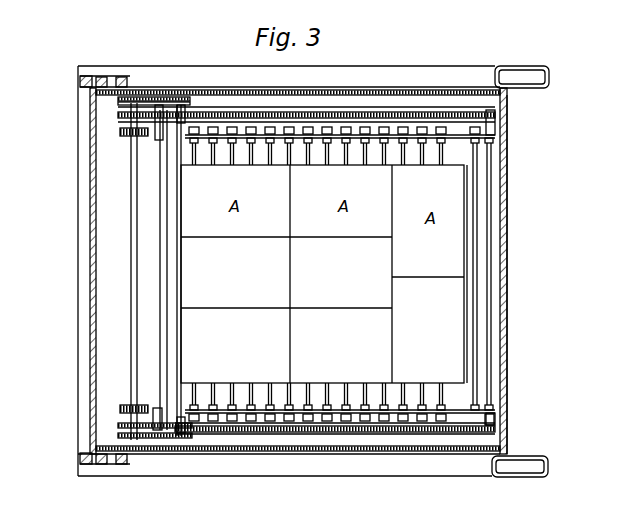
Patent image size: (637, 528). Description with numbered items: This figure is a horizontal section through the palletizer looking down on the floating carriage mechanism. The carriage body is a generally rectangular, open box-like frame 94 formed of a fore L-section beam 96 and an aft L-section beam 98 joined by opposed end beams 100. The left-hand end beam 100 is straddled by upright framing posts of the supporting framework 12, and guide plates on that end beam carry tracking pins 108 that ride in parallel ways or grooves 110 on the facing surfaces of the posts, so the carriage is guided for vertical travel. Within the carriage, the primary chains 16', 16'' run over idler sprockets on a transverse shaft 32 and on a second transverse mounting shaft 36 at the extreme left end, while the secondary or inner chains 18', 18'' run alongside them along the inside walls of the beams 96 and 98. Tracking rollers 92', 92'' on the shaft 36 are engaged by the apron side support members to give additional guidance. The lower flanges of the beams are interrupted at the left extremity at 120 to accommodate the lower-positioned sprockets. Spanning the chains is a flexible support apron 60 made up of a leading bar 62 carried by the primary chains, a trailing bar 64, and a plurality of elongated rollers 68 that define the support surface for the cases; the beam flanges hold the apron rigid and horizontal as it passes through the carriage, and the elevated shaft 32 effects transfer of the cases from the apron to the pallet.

The supporting framework 12 is at (447, 70).
The end beams 100 is at (507, 255).
The aft L-section beam 98 is at (360, 93).
The fore L-section beam 96 is at (333, 449).
The carriage frame 94 is at (505, 170).
The ways or grooves 110 is at (84, 80).
The tracking pins 108 is at (122, 78).
The transverse mounting shaft 36 is at (135, 243).
The transverse shaft 32 is at (165, 203).
The primary chain 16'' is at (154, 76).
The primary chain 16' is at (155, 461).
The secondary chain 18'' is at (306, 108).
The secondary chain 18' is at (360, 428).
The tracking roller 92'' is at (124, 148).
The tracking roller 92' is at (123, 394).
The flange interruption 120 is at (162, 132).
The elongated rollers 68 is at (320, 163).
The flexible support apron 60 is at (500, 392).
The trailing bar 64 is at (504, 418).
The leading bar 62 is at (198, 438).